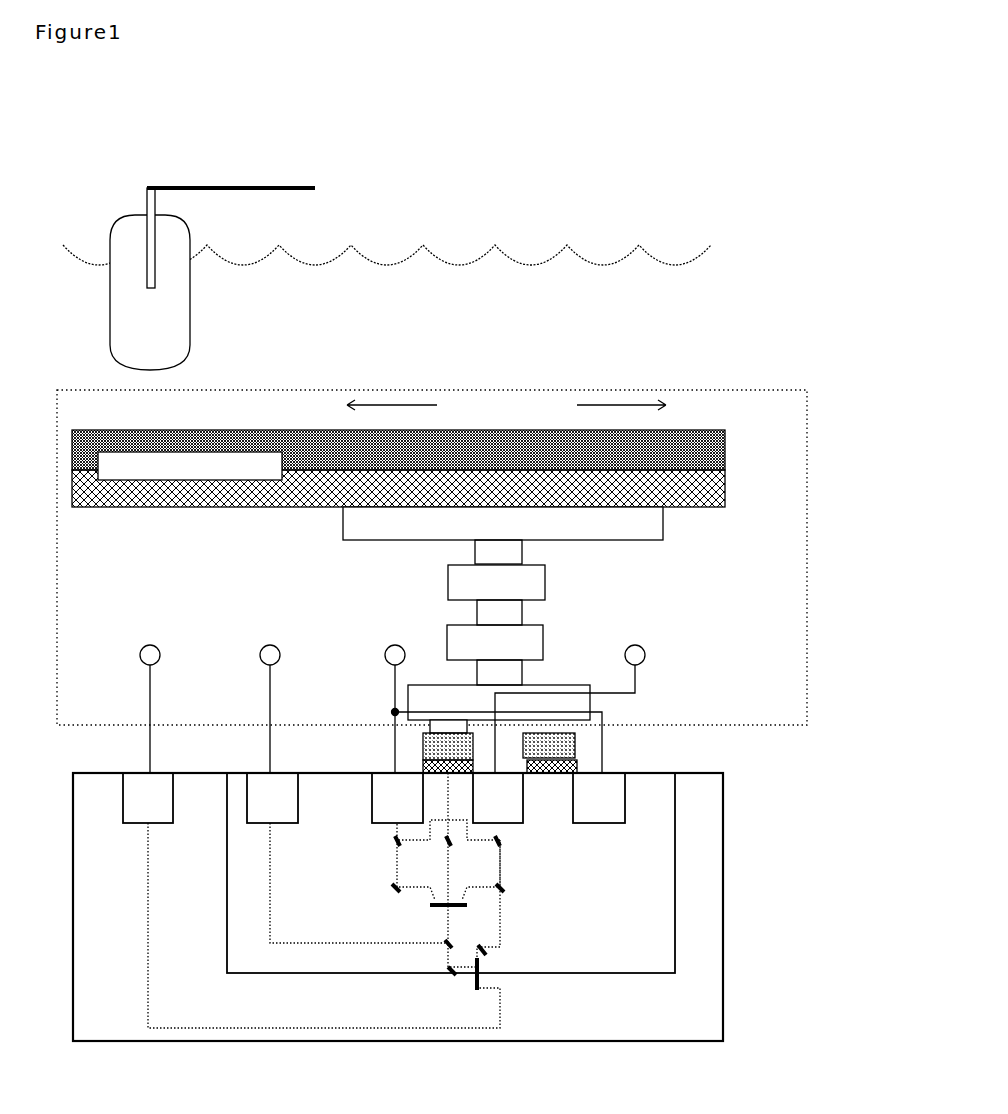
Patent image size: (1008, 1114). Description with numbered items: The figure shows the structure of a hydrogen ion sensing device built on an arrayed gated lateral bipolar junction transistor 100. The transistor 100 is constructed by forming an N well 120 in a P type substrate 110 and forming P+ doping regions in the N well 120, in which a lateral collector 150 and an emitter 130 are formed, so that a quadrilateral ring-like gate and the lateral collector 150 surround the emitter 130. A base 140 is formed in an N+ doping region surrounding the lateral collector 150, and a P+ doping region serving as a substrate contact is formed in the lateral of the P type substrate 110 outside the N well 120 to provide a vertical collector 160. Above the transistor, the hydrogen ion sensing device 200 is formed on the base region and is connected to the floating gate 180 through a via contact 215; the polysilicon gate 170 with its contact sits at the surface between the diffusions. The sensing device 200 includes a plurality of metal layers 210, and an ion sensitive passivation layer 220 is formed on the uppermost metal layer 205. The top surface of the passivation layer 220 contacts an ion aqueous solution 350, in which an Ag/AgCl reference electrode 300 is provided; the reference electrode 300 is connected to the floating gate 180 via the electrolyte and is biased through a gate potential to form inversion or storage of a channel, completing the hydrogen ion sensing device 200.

The arrayed gated lateral bipolar junction transistor 100 is at (451, 898).
The P type substrate 110 is at (703, 1002).
The N well 120 is at (652, 887).
The emitter 130 is at (637, 672).
The base 140 is at (269, 691).
The lateral collector 150 is at (394, 676).
The vertical collector 160 is at (149, 693).
The polysilicon gate 170 is at (423, 758).
The floating gate 180 is at (577, 748).
The hydrogen ion sensing device 200 is at (795, 388).
The uppermost metal layer 205 is at (655, 520).
The metal layers 210 is at (471, 613).
The via contact 215 is at (522, 551).
The ion sensitive passivation layer 220 is at (728, 430).
The reference electrode 300 is at (146, 200).
The ion aqueous solution 350 is at (691, 310).